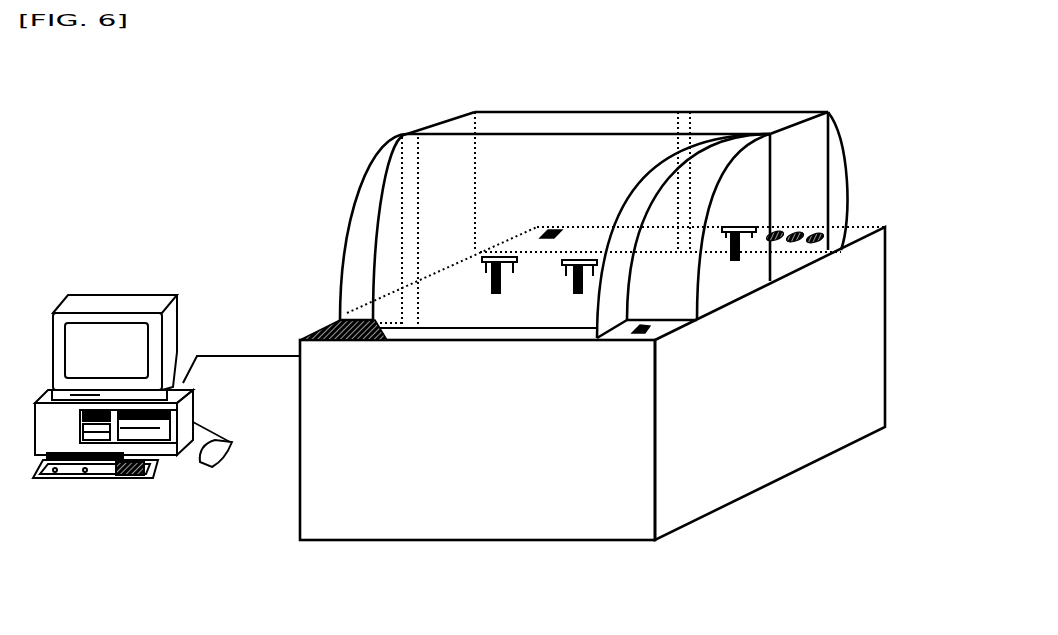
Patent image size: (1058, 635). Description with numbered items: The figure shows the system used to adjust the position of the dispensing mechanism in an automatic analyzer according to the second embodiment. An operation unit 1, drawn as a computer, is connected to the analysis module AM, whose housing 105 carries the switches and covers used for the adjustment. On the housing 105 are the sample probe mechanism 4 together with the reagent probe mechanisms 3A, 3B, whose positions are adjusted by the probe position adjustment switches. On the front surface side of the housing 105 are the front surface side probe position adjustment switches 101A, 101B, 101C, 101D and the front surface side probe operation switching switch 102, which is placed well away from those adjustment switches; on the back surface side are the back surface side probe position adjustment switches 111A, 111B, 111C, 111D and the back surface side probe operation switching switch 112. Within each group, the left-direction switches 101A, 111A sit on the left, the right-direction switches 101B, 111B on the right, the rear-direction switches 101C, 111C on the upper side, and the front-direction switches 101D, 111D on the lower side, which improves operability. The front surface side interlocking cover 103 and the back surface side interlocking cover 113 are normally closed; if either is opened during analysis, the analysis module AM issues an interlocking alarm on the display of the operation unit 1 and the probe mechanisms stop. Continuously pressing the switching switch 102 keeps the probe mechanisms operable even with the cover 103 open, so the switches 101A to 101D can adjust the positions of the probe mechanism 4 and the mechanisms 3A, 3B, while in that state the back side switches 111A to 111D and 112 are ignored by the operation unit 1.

The operation unit 1 is at (100, 303).
The housing 105 is at (767, 400).
The front surface side interlocking cover 103 is at (502, 320).
The front surface side probe position adjustment switch 101C is at (350, 317).
The front surface side probe position adjustment switch 101A is at (310, 343).
The front surface side probe position adjustment switch 101D is at (338, 343).
The front surface side probe position adjustment switch 101B is at (357, 342).
The back surface side interlocking cover 113 is at (753, 188).
The back surface side probe position adjustment switch 111C is at (832, 250).
The analysis module AM is at (470, 243).
The back surface side probe operation switching switch 112 is at (553, 226).
The sample holder 3A is at (490, 273).
The sample holder 3B is at (583, 287).
The sample probe mechanism 4 is at (738, 260).
The back surface side probe position adjustment switch 111B is at (778, 229).
The back surface side probe position adjustment switch 111D is at (797, 229).
The back surface side probe position adjustment switch 111A is at (817, 229).
The front surface side probe operation switching switch 102 is at (640, 336).